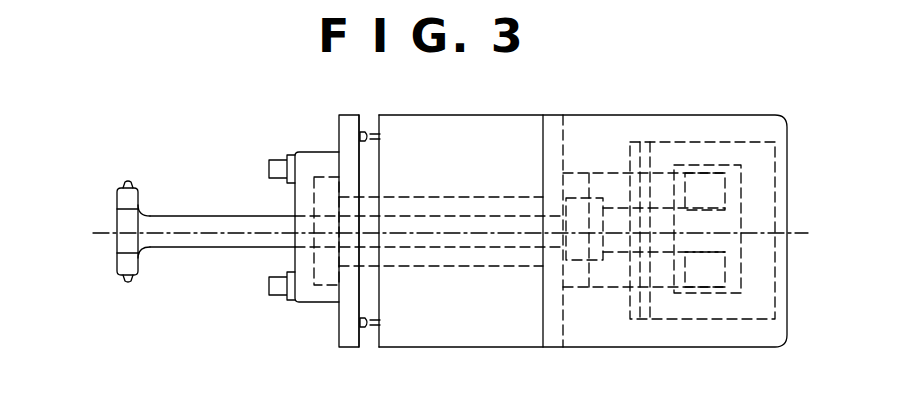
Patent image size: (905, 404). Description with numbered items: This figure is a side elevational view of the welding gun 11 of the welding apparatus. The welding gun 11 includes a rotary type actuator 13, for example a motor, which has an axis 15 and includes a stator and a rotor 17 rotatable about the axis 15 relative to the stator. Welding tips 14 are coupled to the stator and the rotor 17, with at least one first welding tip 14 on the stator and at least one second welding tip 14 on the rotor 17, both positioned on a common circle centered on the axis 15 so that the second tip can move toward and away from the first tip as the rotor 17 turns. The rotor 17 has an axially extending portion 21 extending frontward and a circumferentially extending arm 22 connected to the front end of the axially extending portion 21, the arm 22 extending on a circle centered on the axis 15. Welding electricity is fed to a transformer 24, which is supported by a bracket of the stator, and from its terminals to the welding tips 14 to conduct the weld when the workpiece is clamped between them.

The welding gun 11 is at (680, 118).
The rotary type actuator 13 is at (387, 115).
The welding tip 14 is at (127, 182).
The axis 15 is at (203, 229).
The rotor 17 is at (343, 133).
The axially extending portion 21 is at (178, 243).
The circumferentially extending arm 22 is at (117, 199).
The transformer 24 is at (730, 217).